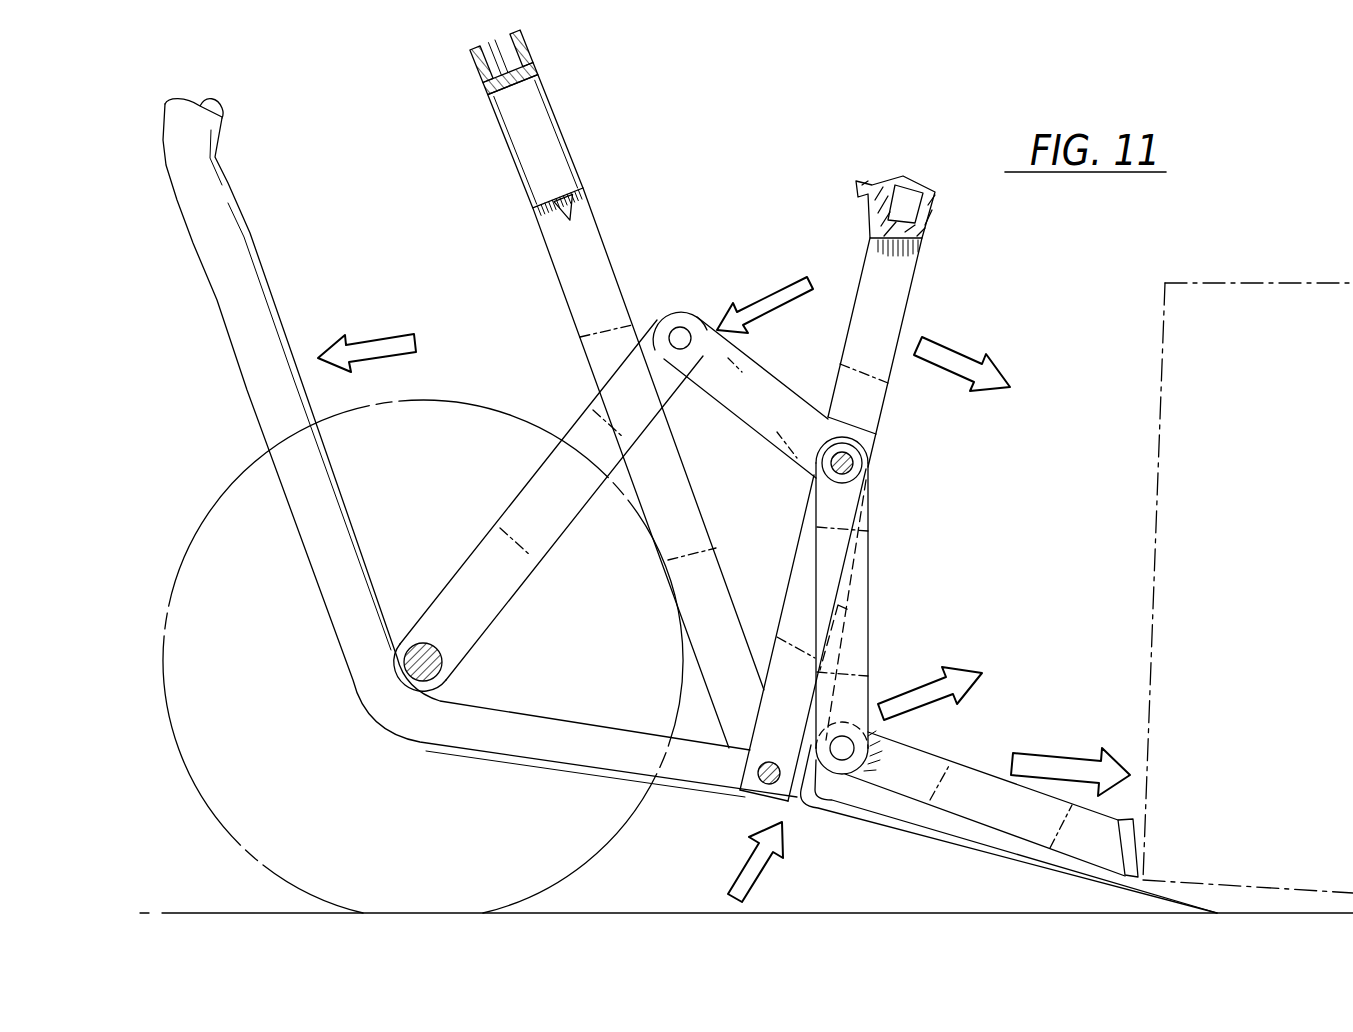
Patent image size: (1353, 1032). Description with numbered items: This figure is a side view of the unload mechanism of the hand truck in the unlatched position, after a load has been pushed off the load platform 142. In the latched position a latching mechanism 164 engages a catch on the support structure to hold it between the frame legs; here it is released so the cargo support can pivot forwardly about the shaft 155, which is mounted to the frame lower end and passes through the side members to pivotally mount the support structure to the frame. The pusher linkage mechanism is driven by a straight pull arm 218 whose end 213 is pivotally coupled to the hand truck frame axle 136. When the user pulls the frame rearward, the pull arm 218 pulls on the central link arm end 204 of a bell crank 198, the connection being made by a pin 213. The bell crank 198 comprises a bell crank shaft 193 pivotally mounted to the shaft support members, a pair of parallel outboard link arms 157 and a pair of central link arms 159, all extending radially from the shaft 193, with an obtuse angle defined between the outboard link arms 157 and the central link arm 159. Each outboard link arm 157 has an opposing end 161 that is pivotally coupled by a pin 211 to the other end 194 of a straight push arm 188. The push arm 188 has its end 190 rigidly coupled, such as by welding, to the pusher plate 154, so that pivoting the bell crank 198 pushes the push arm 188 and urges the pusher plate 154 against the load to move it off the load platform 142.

The latching mechanism 164 is at (555, 146).
The pin 213 is at (680, 332).
The central link arm end 204 is at (686, 383).
The pull arm 218 is at (510, 510).
The hand truck frame axle 136 is at (442, 668).
The central link arm 159 is at (763, 420).
The bell crank 198 is at (872, 466).
The bell crank shaft 193 is at (846, 470).
The outboard link arm 157 is at (862, 633).
The outboard link arm opposing end 161 is at (866, 726).
The pin 211 is at (842, 754).
The push arm other end 194 is at (858, 778).
The push arm 188 is at (970, 780).
The pusher plate 154 is at (1130, 836).
The push arm end 190 is at (1108, 853).
The load platform 142 is at (927, 842).
The shaft 155 is at (767, 787).